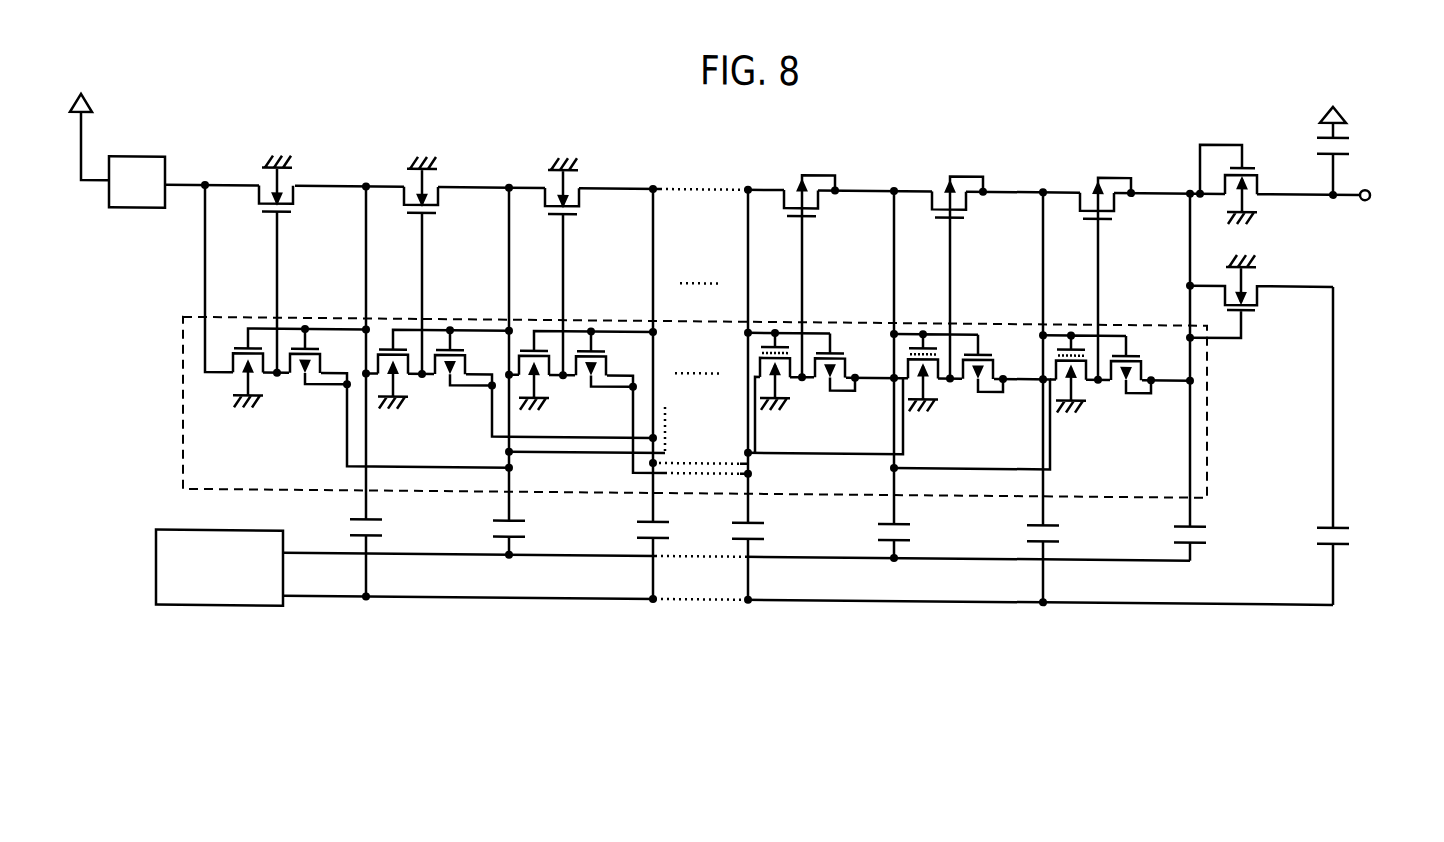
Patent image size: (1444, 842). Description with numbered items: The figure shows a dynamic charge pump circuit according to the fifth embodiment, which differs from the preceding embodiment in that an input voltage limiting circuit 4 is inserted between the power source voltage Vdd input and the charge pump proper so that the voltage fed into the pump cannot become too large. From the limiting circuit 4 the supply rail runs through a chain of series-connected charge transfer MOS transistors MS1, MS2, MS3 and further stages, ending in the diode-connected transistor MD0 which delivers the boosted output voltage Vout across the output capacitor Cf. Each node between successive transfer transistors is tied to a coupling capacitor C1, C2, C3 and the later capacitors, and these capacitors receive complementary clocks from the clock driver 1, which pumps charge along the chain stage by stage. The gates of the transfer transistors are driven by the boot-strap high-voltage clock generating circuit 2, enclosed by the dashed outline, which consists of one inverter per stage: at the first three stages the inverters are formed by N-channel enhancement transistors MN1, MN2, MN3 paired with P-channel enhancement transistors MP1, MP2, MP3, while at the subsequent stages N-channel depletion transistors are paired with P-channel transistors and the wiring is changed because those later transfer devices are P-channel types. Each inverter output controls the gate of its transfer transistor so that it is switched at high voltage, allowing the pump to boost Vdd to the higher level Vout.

The clock driver 1 is at (240, 607).
The high-voltage clock generating circuit 2 is at (1212, 409).
The input voltage limiting circuit 4 is at (143, 157).
The MOS transistor MS1 is at (301, 265).
The MOS transistor MS2 is at (447, 266).
The MOS transistor MS3 is at (590, 267).
The N-channel enhancement transistor MN1 is at (301, 380).
The N-channel enhancement transistor MN2 is at (437, 381).
The N-channel enhancement transistor MN3 is at (581, 383).
The P-channel enhancement transistor MP1 is at (400, 398).
The P-channel enhancement transistor MP2 is at (544, 384).
The P-channel enhancement transistor MP3 is at (620, 400).
The MOS transistor MD0 is at (1243, 185).
The coupling capacitor C1 is at (378, 559).
The coupling capacitor C2 is at (521, 540).
The coupling capacitor C3 is at (665, 562).
The output capacitor Cf is at (1344, 151).
The power source voltage Vdd is at (100, 135).
The output voltage Vout is at (1391, 195).